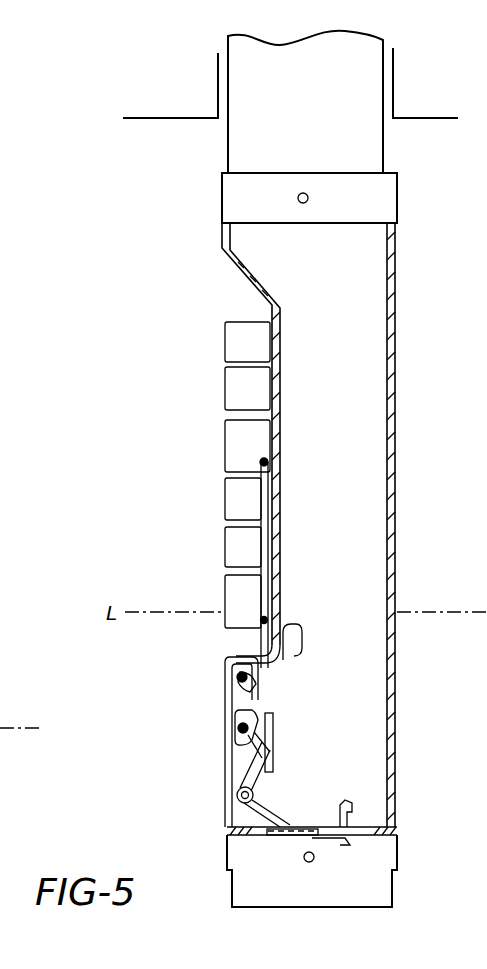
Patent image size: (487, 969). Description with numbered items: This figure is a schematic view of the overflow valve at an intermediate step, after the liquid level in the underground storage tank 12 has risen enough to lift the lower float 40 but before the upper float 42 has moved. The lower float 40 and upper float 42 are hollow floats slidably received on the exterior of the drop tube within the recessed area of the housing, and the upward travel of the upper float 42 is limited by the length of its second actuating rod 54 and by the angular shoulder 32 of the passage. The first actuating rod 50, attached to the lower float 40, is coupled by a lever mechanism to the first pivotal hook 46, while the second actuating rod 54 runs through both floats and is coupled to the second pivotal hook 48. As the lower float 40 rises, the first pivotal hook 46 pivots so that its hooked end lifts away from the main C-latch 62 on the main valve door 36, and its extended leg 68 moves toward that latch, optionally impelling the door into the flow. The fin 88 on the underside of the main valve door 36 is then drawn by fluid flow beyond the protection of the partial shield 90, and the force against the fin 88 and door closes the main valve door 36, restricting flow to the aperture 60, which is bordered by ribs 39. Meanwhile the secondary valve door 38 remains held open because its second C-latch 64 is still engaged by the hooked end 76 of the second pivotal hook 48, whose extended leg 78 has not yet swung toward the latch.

The underground storage tank 12 is at (410, 118).
The angular shoulder 32 is at (238, 277).
The main valve door 36 is at (360, 818).
The secondary valve door 38 is at (275, 722).
The ribs 39 is at (280, 836).
The lower float 40 is at (225, 550).
The upper float 42 is at (225, 390).
The first pivotal hook 46 is at (225, 668).
The second pivotal hook 48 is at (225, 718).
The first actuating rod 50 is at (257, 645).
The second actuating rod 54 is at (261, 490).
The aperture 60 is at (320, 793).
The main C-latch 62 is at (347, 808).
The second C-latch 64 is at (230, 770).
The extended leg 68 is at (225, 700).
The hooked end 76 is at (260, 710).
The extended leg 78 is at (225, 750).
The fin 88 is at (335, 848).
The partial shield 90 is at (292, 652).